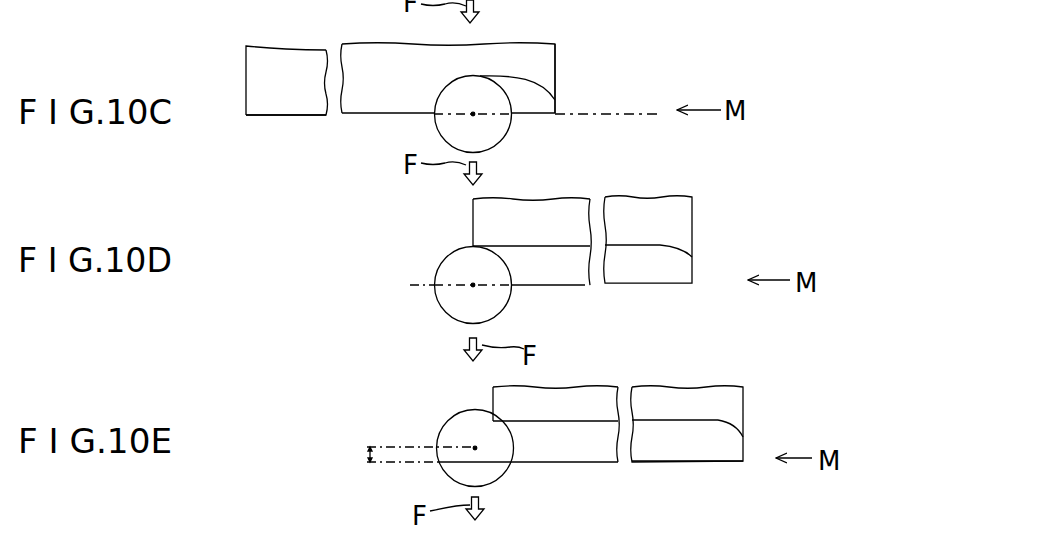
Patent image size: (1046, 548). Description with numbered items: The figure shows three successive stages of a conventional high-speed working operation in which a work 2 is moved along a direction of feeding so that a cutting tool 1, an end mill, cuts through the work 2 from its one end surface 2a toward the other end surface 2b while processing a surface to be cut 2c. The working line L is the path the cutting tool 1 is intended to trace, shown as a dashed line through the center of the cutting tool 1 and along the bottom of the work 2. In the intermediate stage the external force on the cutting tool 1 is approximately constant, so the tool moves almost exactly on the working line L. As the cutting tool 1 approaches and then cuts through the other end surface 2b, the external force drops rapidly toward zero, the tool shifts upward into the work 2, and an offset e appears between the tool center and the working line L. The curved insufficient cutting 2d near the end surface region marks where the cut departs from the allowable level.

In FIG. 10C, the cutting tool 1 is at (492, 133).
In FIG. 10D, the cutting tool 1 is at (460, 310).
In FIG. 10E, the cutting tool 1 is at (450, 435).
In FIG. 10C, the work 2 is at (522, 34).
In FIG. 10D, the work 2 is at (623, 193).
In FIG. 10E, the work 2 is at (685, 379).
In FIG. 10C, the one end surface 2a is at (555, 57).
In FIG. 10D, the one end surface 2a is at (692, 208).
In FIG. 10E, the one end surface 2a is at (743, 397).
In FIG. 10C, the other end surface 2b is at (246, 70).
In FIG. 10D, the other end surface 2b is at (473, 220).
In FIG. 10E, the other end surface 2b is at (493, 399).
In FIG. 10C, the surface to be cut 2c is at (300, 115).
In FIG. 10D, the surface to be cut 2c is at (560, 285).
In FIG. 10E, the surface to be cut 2c is at (566, 462).
In FIG. 10C, the insufficient cutting 2d is at (555, 77).
In FIG. 10D, the insufficient cutting 2d is at (692, 239).
In FIG. 10E, the insufficient cutting 2d is at (737, 418).
In FIG. 10C, the working line L is at (632, 110).
In FIG. 10D, the working line L is at (420, 286).
In FIG. 10E, the working line L is at (400, 463).
In FIG. 10E, the offset distance e is at (360, 458).